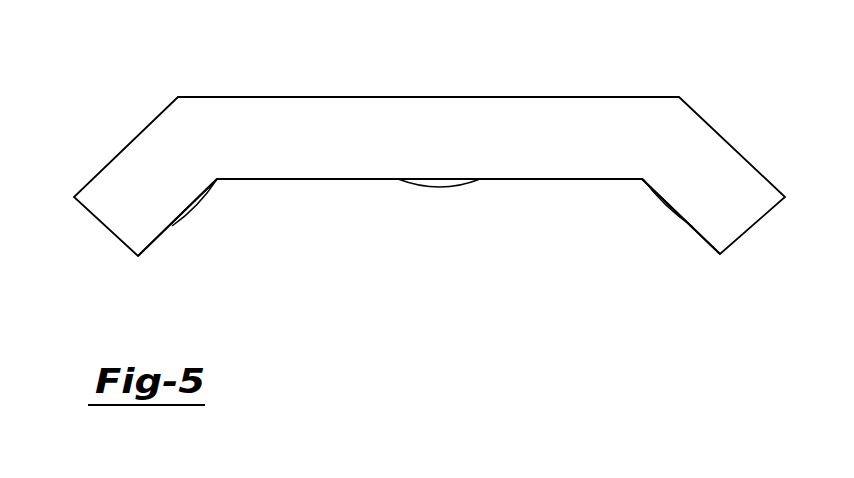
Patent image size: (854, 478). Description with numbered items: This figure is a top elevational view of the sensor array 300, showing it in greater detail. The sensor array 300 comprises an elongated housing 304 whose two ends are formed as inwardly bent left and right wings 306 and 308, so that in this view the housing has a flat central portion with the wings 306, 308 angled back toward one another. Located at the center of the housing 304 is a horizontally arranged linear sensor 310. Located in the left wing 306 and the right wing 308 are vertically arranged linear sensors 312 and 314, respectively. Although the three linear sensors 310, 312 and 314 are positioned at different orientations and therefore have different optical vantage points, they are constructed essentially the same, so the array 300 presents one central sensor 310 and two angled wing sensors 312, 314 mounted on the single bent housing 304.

The sensor array 300 is at (545, 52).
The elongated housing 304 is at (432, 153).
The linear sensor 310 is at (440, 182).
The left wing 306 is at (193, 173).
The linear sensor 312 is at (191, 208).
The linear sensor 314 is at (663, 213).
The right wing 308 is at (712, 227).